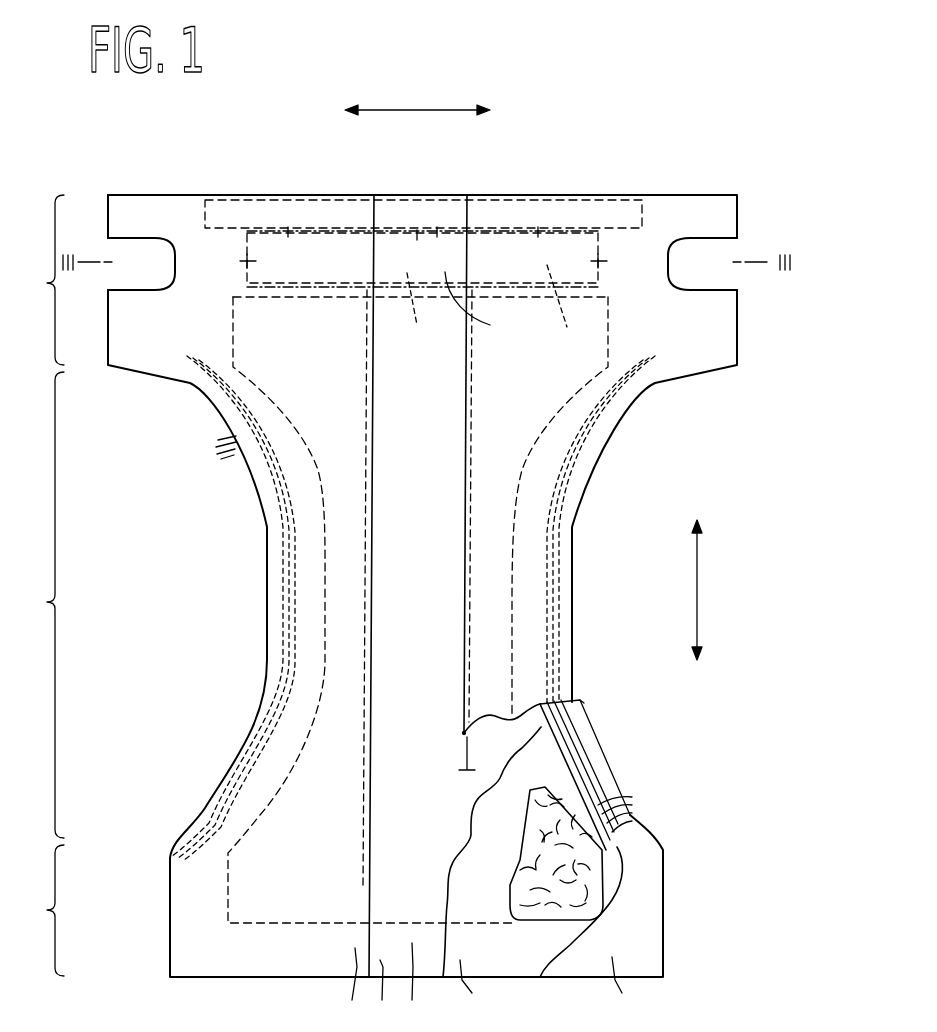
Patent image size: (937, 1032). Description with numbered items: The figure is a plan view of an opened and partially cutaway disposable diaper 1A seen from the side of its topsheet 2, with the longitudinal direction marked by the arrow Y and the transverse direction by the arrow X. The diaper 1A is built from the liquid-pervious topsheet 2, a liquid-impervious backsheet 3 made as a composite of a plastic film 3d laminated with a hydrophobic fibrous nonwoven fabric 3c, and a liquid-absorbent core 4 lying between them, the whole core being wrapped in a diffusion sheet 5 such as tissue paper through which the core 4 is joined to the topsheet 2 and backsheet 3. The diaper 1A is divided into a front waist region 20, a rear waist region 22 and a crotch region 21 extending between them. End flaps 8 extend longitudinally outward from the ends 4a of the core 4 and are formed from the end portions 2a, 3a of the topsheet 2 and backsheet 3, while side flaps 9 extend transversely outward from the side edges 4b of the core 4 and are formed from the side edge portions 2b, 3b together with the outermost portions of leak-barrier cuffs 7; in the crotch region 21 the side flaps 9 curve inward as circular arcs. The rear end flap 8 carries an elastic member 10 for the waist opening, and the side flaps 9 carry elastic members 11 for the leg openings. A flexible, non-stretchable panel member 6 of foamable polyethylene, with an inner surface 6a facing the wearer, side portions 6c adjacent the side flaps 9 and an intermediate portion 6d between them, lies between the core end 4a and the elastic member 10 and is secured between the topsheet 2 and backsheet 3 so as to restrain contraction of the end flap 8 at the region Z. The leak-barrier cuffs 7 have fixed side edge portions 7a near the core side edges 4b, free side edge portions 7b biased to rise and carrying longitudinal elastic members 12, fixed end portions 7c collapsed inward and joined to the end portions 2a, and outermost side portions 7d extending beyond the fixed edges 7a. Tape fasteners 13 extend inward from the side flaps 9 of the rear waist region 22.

The diaper 1A is at (607, 108).
The topsheet 2 is at (440, 891).
The end portion of topsheet 2a is at (437, 227).
The side edge portion of topsheet 2b is at (243, 715).
The backsheet 3 is at (577, 797).
The end portion of backsheet 3a is at (465, 222).
The side edge portion of backsheet 3b is at (267, 540).
The hydrophobic fibrous nonwoven fabric 3c is at (607, 903).
The plastic film 3d is at (628, 989).
The liquid-absorbent core 4 is at (532, 857).
The end of core 4a is at (305, 293).
The side edge of core 4b is at (320, 627).
The diffusion sheet 5 is at (467, 843).
The panel member 6 is at (397, 227).
The inner surface of panel member 6a is at (565, 307).
The side portions of panel member 6c is at (240, 262).
The intermediate portion of panel member 6d is at (422, 312).
The leak-barrier cuffs 7 is at (307, 563).
The fixed side edge portion of leak-barrier cuff 7a is at (320, 677).
The free side edge portion of leak-barrier cuff 7b is at (353, 540).
The fixed end portion of leak-barrier cuff 7c is at (288, 227).
The outermost side portion of leak-barrier cuff 7d is at (267, 601).
The end flaps 8 is at (417, 230).
The side flaps 9 is at (253, 497).
The elastic member associated with waist-opening 10 is at (595, 213).
The elastic members associated with leg-openings 11 is at (218, 455).
The elastic members 12 is at (377, 412).
The tape fasteners 13 is at (112, 242).
The front waist region 20 is at (39, 910).
The crotch region 21 is at (39, 605).
The rear waist region 22 is at (40, 280).
The transverse direction X is at (405, 110).
The longitudinal direction Y is at (697, 607).
The region of end flap Z is at (475, 306).